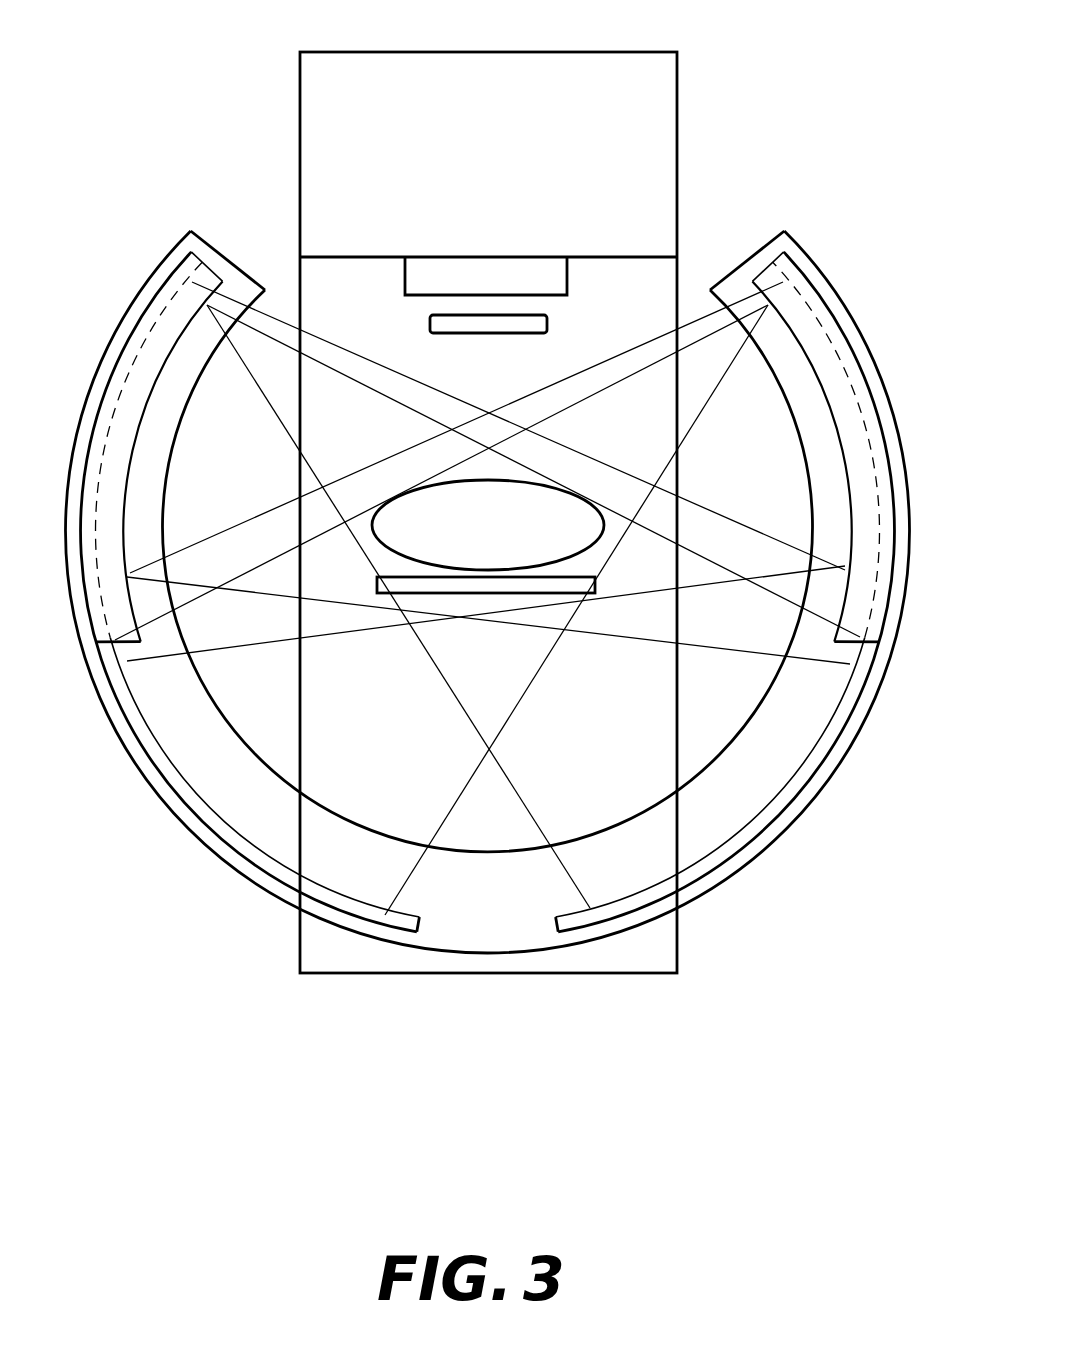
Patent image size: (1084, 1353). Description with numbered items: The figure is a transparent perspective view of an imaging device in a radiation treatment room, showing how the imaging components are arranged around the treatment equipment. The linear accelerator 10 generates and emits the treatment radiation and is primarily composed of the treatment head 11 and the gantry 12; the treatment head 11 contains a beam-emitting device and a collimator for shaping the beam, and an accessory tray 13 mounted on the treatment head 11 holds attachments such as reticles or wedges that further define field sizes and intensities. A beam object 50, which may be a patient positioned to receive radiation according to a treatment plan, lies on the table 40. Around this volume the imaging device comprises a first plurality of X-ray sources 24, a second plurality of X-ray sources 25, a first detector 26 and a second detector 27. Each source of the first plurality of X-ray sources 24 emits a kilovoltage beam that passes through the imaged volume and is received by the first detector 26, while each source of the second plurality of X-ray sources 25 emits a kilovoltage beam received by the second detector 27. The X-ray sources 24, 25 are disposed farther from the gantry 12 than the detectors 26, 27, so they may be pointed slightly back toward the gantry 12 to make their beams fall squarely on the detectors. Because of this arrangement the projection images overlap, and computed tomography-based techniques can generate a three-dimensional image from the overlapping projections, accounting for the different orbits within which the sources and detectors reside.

The linear accelerator 10 is at (733, 73).
The treatment head 11 is at (569, 265).
The gantry 12 is at (677, 517).
The accessory tray 13 is at (548, 323).
The first plurality of X-ray sources 24 is at (762, 271).
The second plurality of X-ray sources 25 is at (213, 271).
The first detector 26 is at (203, 798).
The second detector 27 is at (773, 798).
The table 40 is at (425, 594).
The beam object 50 is at (530, 483).